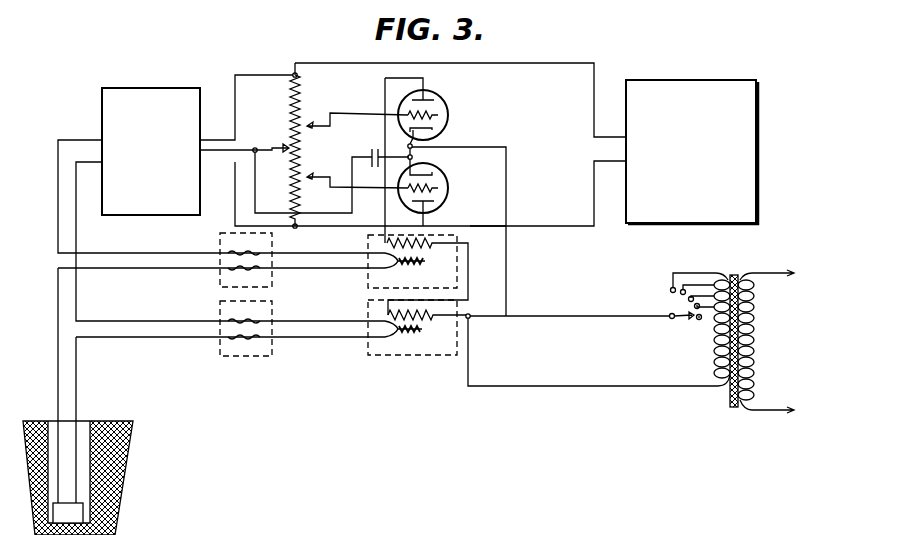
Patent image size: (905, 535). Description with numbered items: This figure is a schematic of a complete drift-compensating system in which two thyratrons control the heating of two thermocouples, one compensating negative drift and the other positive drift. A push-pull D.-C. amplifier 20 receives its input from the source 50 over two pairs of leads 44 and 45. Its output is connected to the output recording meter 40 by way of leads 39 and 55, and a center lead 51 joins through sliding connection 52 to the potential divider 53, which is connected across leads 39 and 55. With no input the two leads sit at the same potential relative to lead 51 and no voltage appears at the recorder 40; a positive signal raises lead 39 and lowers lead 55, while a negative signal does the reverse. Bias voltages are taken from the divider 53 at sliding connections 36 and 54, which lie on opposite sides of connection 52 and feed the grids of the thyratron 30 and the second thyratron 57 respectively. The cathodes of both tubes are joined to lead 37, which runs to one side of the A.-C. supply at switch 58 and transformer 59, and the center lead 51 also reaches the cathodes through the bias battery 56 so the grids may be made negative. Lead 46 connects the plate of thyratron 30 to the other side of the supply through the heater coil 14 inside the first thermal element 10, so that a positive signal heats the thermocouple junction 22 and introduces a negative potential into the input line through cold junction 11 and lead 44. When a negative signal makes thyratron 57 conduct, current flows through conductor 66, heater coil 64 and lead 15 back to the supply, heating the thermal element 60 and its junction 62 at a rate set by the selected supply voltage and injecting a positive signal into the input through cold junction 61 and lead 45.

The heating chamber (dashed enclosure) for measuring thermocouple 10 is at (367, 243).
The cold junction 11 is at (218, 276).
The heater coil 14 is at (440, 240).
The lead 15 is at (600, 386).
The D.C. amplifier 20 is at (161, 222).
The thermocouple junction 22 is at (413, 264).
The thyratron 30 is at (452, 98).
The sliding connection 36 is at (322, 118).
The lead 37 is at (591, 316).
The lead 39 is at (546, 63).
The output recording meter 40 is at (688, 77).
The lead 44 is at (58, 253).
The lead 45 is at (106, 321).
The lead 46 is at (385, 88).
The source 50 is at (72, 513).
The center lead 51 is at (254, 156).
The sliding connection 52 is at (276, 146).
The potential divider 53 is at (290, 104).
The sliding connection 54 is at (322, 180).
The lead 55 is at (430, 231).
The bias battery 56 is at (372, 153).
The second thyratron 57 is at (452, 181).
The switch 58 is at (675, 310).
The transformer 59 is at (736, 276).
The thermal element 60 is at (396, 363).
The cold junction 61 is at (218, 312).
The thermocouple junction 62 is at (414, 332).
The heater coil 64 is at (388, 301).
The conductor 66 is at (487, 226).